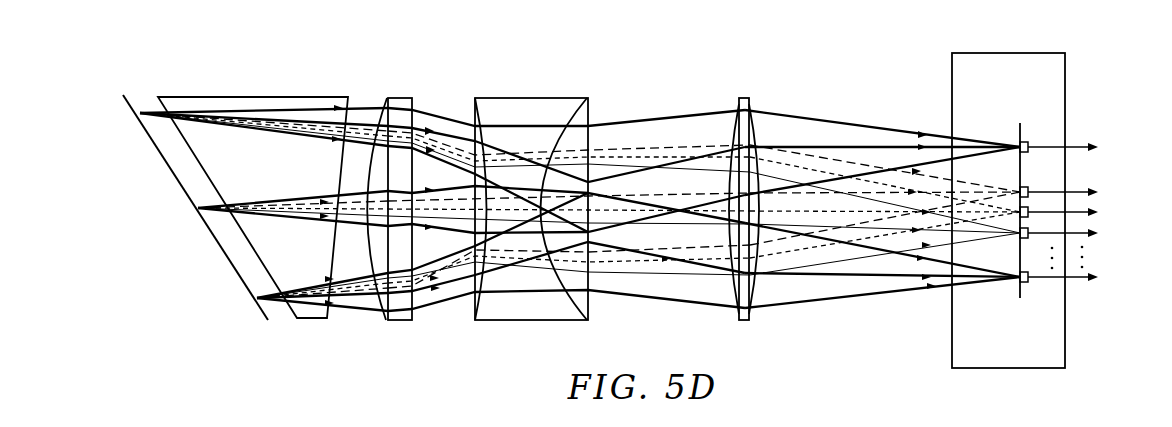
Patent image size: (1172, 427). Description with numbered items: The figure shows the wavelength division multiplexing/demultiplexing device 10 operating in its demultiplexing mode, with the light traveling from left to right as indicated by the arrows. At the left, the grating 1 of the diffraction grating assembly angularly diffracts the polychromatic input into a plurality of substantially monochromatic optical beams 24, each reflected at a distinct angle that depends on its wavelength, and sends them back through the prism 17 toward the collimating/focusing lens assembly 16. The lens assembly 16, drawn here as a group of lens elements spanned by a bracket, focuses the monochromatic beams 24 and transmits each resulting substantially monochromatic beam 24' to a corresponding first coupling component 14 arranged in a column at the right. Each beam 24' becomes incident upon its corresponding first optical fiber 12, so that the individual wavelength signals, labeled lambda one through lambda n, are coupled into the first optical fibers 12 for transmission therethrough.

The wavelength division multiplexing/demultiplexing (WDM) device 10 is at (163, 58).
The grating 1 is at (181, 188).
The prism 17 is at (277, 104).
The substantially monochromatic optical beams 24 is at (264, 181).
The collimating/focusing lens assembly 16 is at (768, 93).
The collimated substantially monochromatic optical beams 24' is at (882, 183).
The first coupling components 14 is at (1028, 140).
The first optical fibers 12 is at (1090, 142).